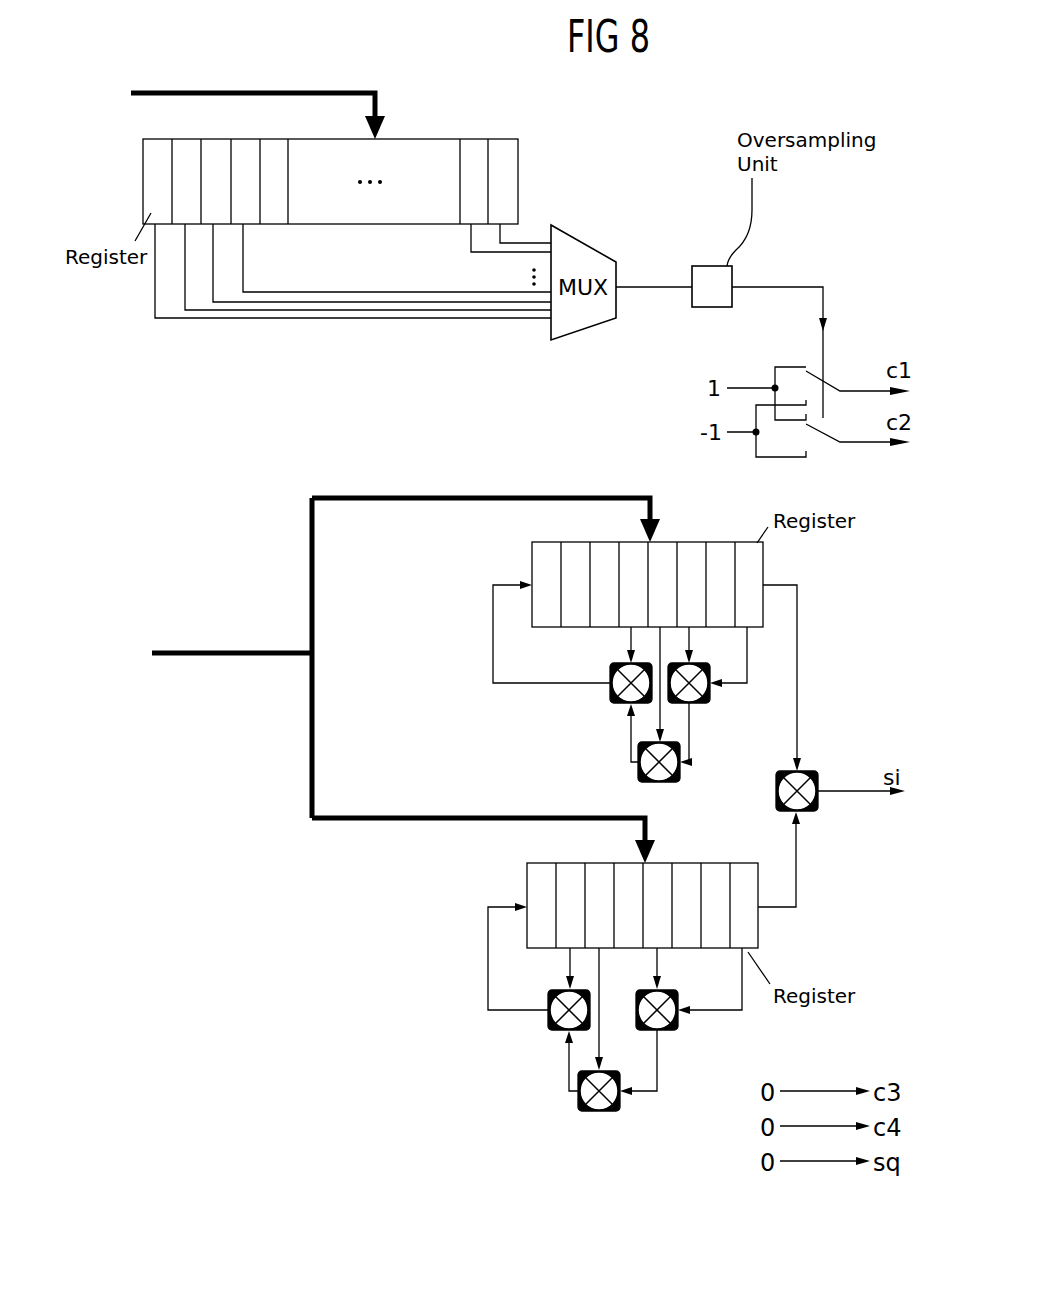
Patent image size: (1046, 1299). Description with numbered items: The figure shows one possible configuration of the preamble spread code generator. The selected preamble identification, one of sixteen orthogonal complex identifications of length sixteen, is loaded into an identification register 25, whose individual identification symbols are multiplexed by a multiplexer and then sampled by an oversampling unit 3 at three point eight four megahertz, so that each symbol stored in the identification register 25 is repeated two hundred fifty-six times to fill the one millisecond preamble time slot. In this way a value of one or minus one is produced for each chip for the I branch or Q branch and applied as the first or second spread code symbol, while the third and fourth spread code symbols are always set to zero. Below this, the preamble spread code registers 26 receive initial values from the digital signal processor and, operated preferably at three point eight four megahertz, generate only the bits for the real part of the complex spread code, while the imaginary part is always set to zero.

The identification register 25 is at (436, 139).
The oversampling unit 3 is at (712, 266).
The preamble spread code registers 26 is at (763, 549).